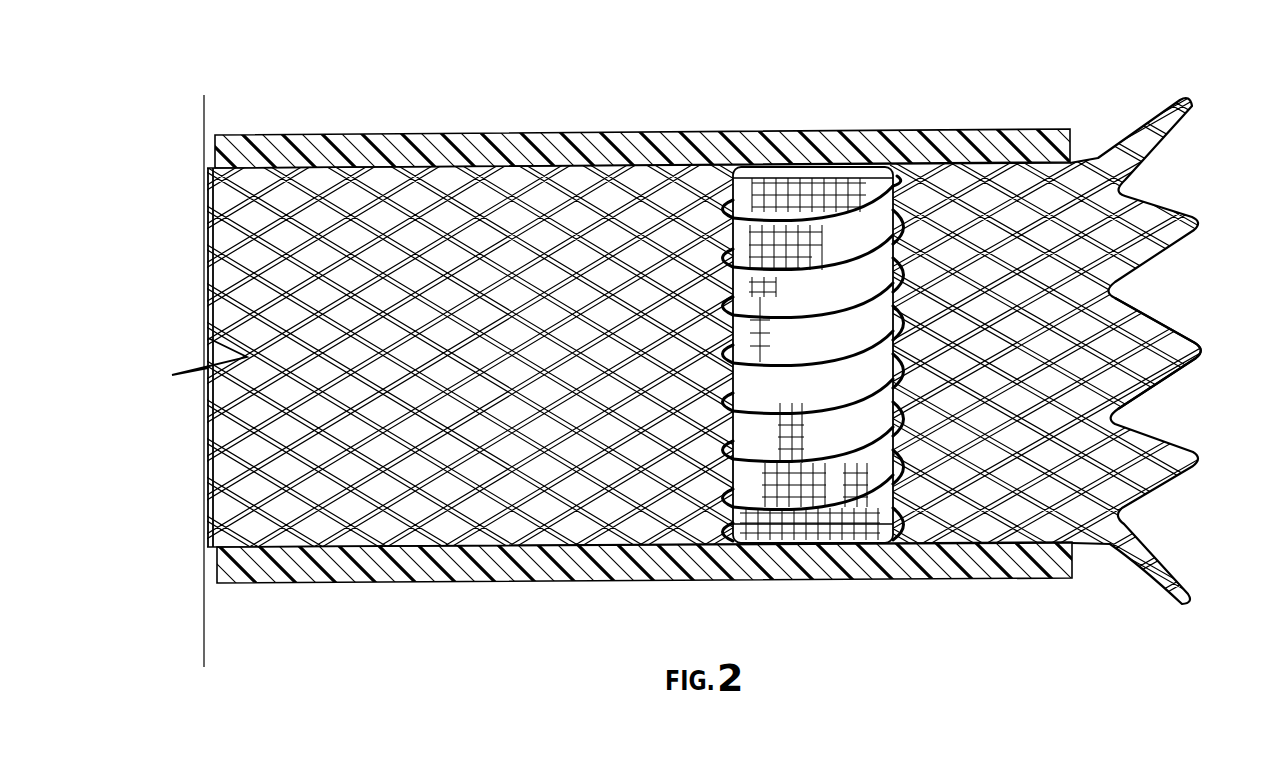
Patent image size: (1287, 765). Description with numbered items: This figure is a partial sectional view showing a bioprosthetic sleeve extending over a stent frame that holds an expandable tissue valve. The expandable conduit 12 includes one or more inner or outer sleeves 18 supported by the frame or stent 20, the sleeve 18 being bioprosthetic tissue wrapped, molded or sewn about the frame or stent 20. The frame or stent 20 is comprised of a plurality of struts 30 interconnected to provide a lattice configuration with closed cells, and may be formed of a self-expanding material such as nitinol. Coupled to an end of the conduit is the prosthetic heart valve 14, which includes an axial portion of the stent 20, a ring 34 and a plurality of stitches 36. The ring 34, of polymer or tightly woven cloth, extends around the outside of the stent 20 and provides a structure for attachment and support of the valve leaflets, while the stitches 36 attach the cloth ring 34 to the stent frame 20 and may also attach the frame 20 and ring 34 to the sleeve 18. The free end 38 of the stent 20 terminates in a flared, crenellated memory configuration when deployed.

The expandable conduit 12 is at (515, 195).
The prosthetic heart valve 14 is at (863, 155).
The sleeve 18 is at (285, 133).
The frame or stent 20 is at (1155, 223).
The struts 30 is at (207, 300).
The ring 34 is at (875, 232).
The stitches 36 is at (752, 182).
The free end 38 is at (1202, 352).